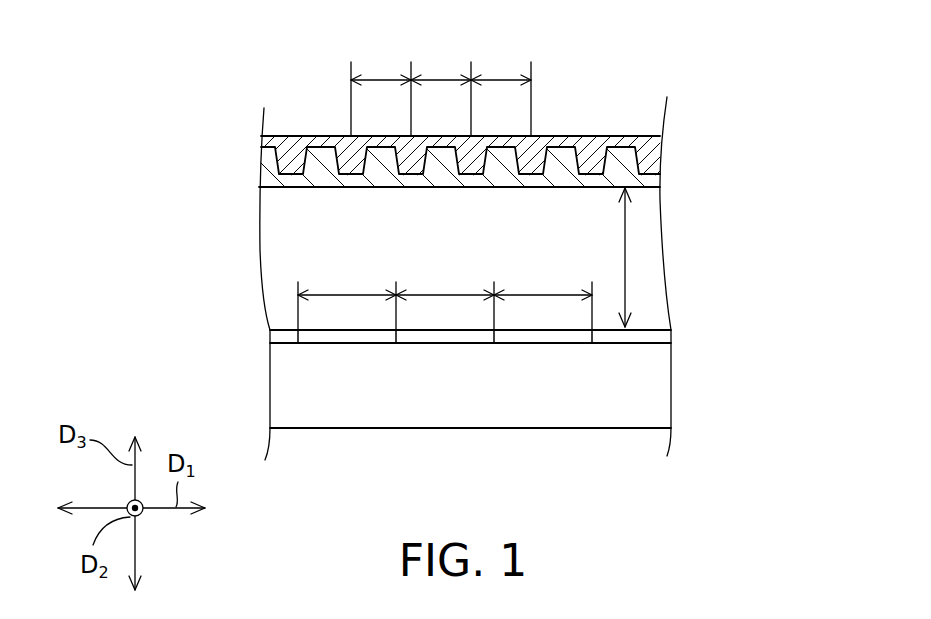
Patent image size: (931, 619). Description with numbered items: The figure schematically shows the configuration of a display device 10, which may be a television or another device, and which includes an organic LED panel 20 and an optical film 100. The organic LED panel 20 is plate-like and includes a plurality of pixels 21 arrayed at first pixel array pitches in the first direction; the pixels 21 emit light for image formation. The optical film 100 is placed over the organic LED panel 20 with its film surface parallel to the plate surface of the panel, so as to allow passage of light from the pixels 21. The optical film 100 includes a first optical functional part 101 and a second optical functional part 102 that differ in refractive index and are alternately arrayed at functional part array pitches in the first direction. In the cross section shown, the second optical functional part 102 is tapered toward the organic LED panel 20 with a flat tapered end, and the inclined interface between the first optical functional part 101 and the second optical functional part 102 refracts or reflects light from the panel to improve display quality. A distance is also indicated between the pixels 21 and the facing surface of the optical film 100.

The display device 10 is at (677, 66).
The optical film 100 is at (583, 133).
The first optical functional part 101 is at (318, 162).
The second optical functional part 102 is at (345, 167).
The organic LED panel 20 is at (625, 433).
The pixel 21 is at (343, 338).